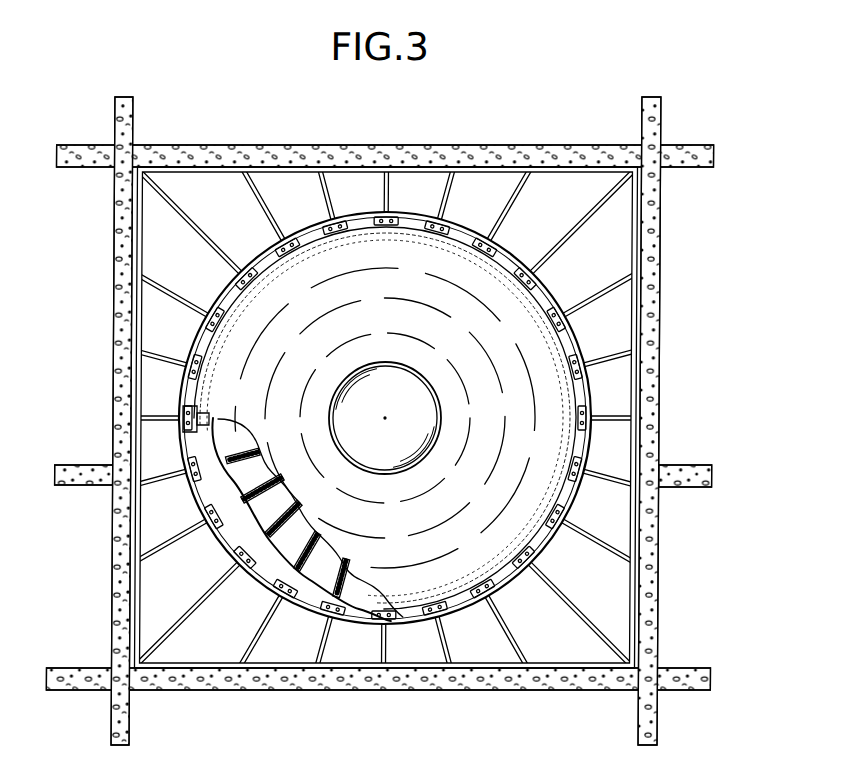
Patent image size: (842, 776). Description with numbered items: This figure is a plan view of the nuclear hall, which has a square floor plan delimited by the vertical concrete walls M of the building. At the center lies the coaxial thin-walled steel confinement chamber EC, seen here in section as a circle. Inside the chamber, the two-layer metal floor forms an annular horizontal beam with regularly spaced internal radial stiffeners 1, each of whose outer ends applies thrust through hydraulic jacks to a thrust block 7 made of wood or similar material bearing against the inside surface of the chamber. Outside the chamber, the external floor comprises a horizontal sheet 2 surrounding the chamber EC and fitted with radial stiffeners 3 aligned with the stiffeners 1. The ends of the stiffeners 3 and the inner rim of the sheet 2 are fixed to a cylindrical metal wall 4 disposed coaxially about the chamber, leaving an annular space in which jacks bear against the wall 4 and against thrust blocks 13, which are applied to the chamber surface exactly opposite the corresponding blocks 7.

The internal radial stiffeners 1 is at (260, 465).
The horizontal sheet 2 is at (150, 510).
The radial stiffeners 3 is at (155, 546).
The cylindrical metal wall 4 is at (260, 585).
The thrust block 7 is at (237, 527).
The thrust block 13 is at (206, 528).
The confinement chamber EC is at (317, 247).
The vertical walls M is at (529, 166).